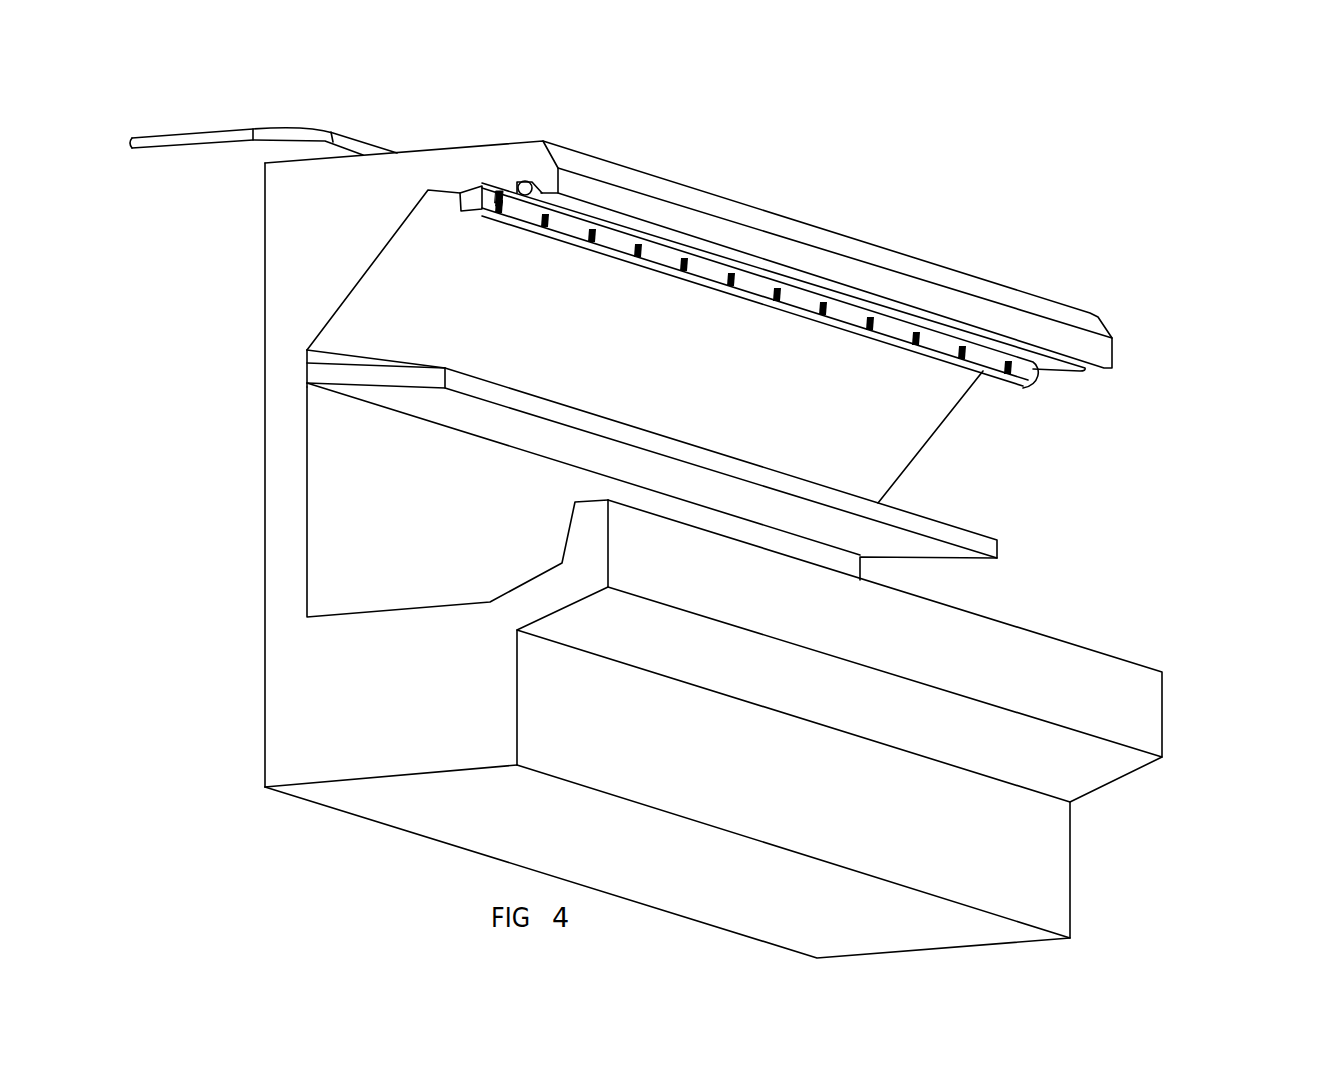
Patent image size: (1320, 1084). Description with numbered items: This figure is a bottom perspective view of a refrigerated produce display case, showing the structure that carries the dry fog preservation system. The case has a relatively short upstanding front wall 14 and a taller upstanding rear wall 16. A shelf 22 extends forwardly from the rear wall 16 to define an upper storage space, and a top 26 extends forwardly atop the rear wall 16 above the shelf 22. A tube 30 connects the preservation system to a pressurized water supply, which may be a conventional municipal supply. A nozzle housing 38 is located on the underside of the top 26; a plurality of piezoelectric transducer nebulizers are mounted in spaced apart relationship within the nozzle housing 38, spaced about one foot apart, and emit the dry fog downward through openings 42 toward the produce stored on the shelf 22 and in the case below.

The front wall 14 is at (1100, 698).
The rear wall 16 is at (327, 670).
The shelf 22 is at (893, 538).
The top 26 is at (430, 148).
The tube 30 is at (217, 130).
The nozzle housing 38 is at (1023, 380).
The openings 42 is at (918, 340).